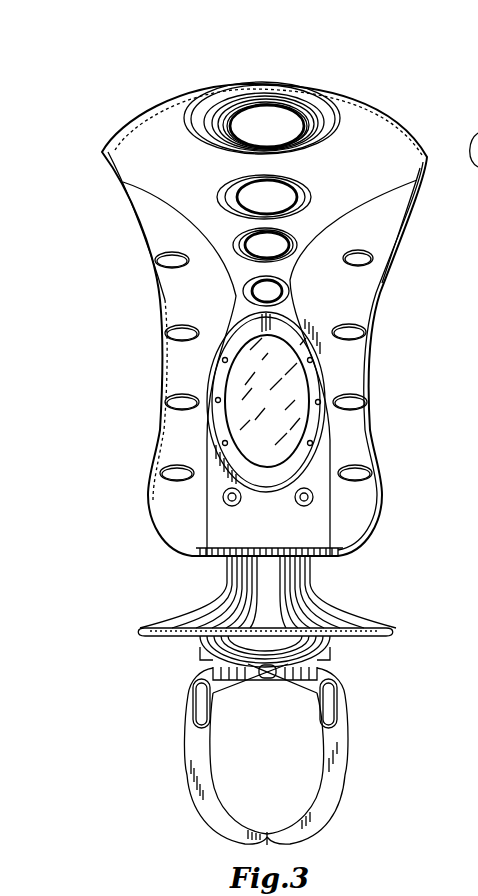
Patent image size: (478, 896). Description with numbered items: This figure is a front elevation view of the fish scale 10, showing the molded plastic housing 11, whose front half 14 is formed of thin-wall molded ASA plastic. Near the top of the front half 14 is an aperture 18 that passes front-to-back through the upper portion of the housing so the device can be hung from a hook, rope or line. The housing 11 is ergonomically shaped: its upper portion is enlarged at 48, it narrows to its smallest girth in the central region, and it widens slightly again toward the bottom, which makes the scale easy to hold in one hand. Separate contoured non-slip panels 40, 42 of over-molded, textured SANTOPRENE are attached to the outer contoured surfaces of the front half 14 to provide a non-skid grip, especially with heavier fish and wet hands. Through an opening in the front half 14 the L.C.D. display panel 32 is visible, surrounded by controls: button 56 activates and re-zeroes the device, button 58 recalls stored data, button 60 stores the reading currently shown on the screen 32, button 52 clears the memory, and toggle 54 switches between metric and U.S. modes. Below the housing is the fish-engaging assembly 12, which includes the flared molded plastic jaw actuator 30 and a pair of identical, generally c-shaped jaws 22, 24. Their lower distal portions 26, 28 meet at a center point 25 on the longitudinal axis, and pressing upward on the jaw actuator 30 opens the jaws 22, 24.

The fish scale 10 is at (399, 55).
The molded plastic housing 11 is at (395, 100).
The fish-engaging assembly 12 is at (364, 600).
The front half of the housing 14 is at (160, 130).
The aperture 18 is at (266, 120).
The jaw 22 is at (340, 779).
The jaw 24 is at (190, 760).
The center point 25 is at (282, 702).
The lower distal portion 26 is at (282, 823).
The lower distal portion 28 is at (262, 833).
The jaw actuator 30 is at (172, 638).
The display panel 32 is at (258, 401).
The contoured panel 40 is at (350, 303).
The contoured panel 42 is at (178, 292).
The enlarged upper portion 48 is at (102, 153).
The button 52 is at (312, 504).
The toggle 54 is at (224, 499).
The button 56 is at (270, 292).
The button 58 is at (267, 253).
The button 60 is at (272, 198).